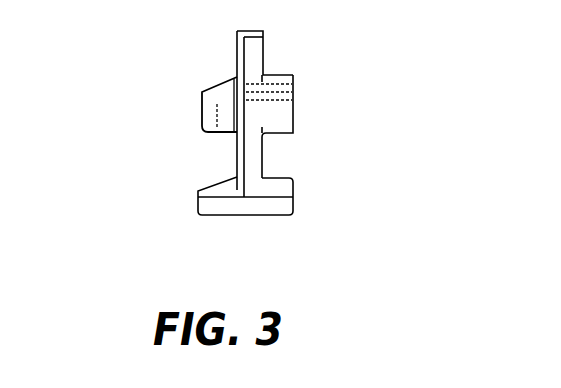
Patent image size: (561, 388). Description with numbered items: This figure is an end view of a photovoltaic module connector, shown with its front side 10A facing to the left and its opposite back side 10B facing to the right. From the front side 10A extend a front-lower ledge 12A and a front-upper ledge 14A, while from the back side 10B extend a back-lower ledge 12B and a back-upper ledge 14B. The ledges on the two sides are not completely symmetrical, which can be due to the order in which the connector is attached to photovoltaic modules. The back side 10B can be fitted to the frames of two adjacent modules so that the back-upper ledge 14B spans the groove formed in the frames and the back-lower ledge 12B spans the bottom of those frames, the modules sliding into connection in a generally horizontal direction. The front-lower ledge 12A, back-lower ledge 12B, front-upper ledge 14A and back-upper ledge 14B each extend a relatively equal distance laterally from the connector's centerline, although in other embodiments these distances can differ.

The front side 10A is at (112, 117).
The back side 10B is at (373, 118).
The front-upper ledge 14A is at (200, 93).
The back-upper ledge 14B is at (293, 107).
The front-lower ledge 12A is at (198, 199).
The back-lower ledge 12B is at (295, 208).